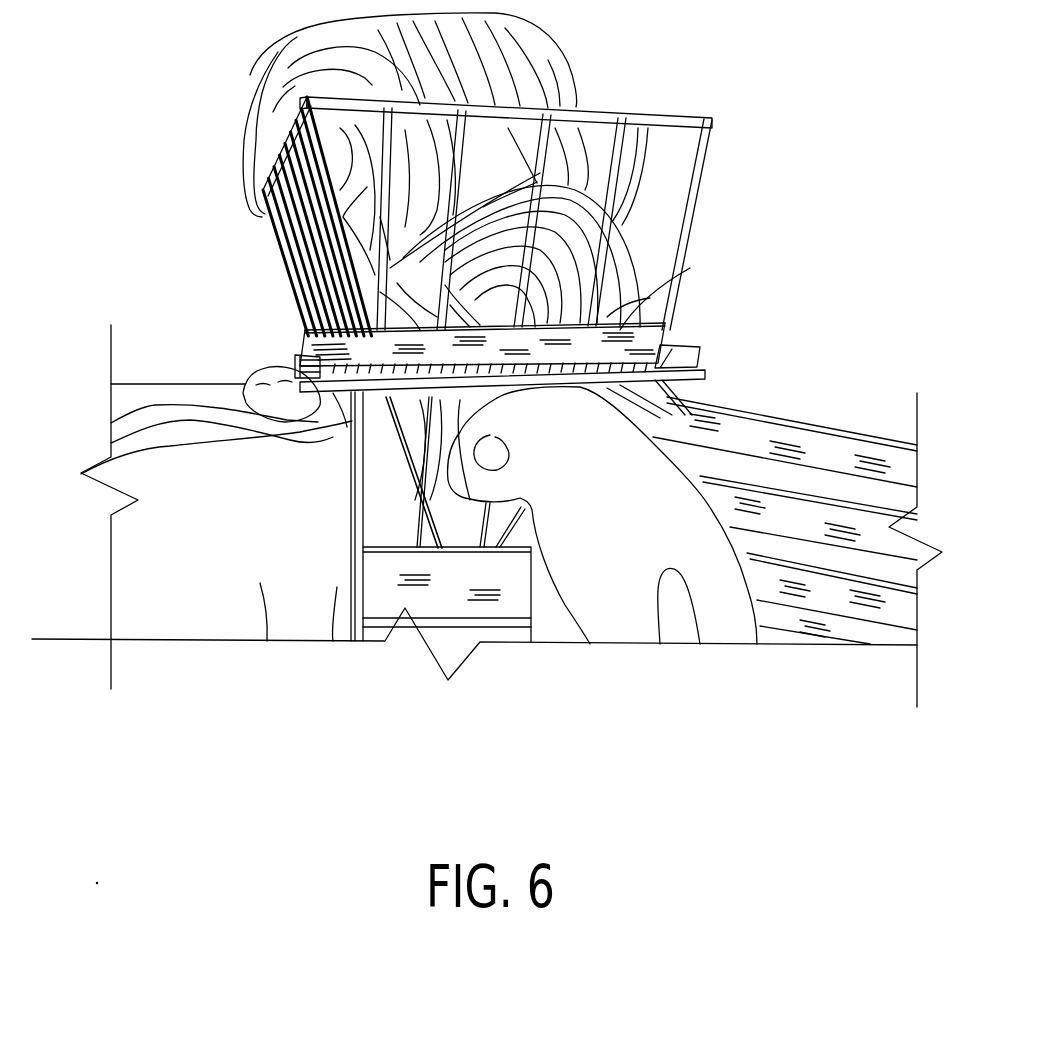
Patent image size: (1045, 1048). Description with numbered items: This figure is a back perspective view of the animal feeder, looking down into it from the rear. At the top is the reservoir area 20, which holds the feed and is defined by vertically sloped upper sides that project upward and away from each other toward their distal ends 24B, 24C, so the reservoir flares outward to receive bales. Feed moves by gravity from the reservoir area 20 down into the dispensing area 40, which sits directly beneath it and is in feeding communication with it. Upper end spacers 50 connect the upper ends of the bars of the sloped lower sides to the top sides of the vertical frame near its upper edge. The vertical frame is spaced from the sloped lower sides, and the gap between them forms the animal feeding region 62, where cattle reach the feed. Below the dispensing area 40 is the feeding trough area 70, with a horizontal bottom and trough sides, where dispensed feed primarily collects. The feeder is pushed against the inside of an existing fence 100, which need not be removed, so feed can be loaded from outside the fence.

The reservoir area 20 is at (778, 168).
The distal end of vertically sloped upper side 24B is at (285, 153).
The distal end of vertically sloped upper side 24C is at (598, 110).
The dispensing area 40 is at (680, 345).
The upper end spacer 50 is at (593, 363).
The animal feeding region 62 is at (330, 404).
The feeding trough area 70 is at (444, 608).
The fence 100 is at (806, 422).